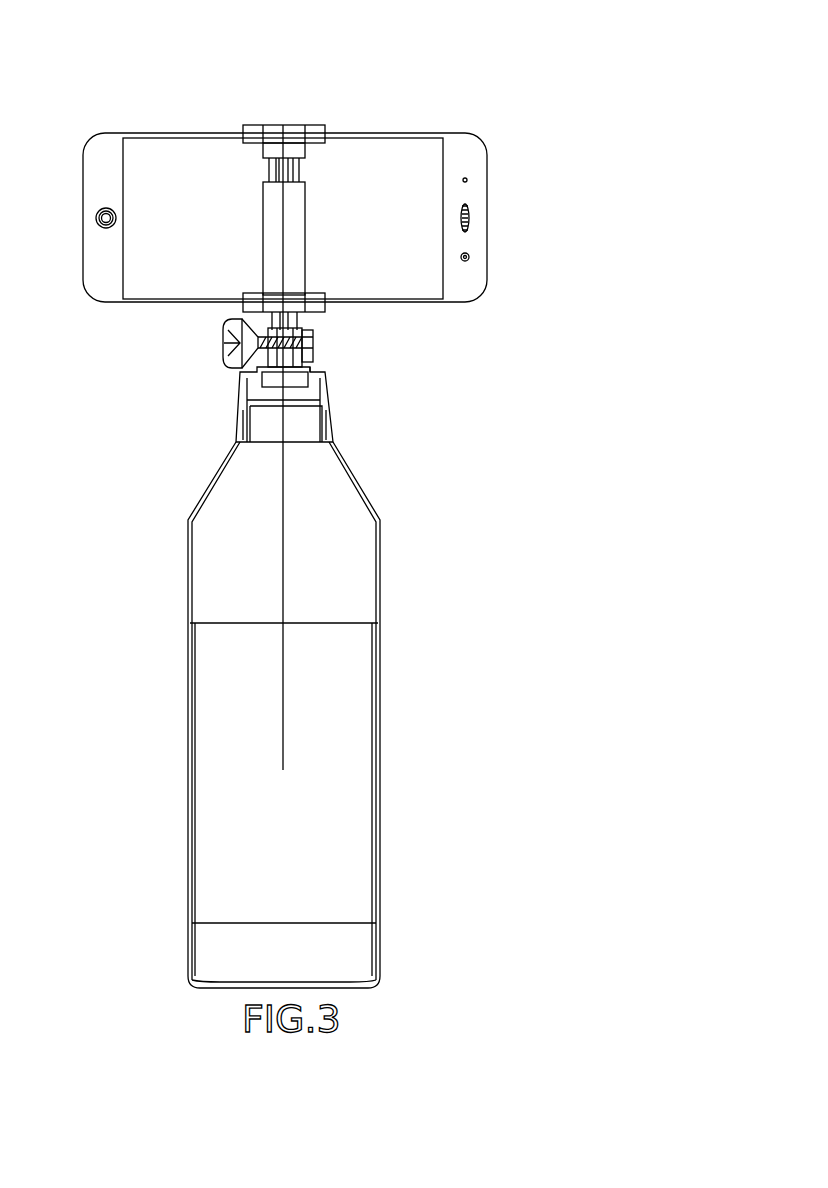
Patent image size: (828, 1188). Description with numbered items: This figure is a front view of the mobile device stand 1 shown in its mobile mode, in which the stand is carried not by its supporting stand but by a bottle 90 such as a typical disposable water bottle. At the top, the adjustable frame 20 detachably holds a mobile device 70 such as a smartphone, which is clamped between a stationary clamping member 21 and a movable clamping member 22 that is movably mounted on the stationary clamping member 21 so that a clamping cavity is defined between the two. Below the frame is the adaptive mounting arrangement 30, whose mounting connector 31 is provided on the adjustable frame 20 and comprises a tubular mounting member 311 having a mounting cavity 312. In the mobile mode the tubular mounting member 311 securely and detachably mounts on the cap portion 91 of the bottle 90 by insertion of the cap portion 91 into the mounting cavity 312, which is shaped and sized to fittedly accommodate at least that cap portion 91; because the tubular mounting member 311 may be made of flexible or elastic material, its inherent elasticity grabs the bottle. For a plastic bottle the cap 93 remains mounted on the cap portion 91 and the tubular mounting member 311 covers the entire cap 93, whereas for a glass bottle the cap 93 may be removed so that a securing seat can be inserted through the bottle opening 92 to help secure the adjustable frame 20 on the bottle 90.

The mobile device stand 1 is at (470, 407).
The adjustable frame 20 is at (250, 183).
The stationary clamping member 21 is at (275, 233).
The movable clamping member 22 is at (266, 126).
The adaptive mounting arrangement 30 is at (335, 335).
The mounting connector 31 is at (290, 426).
The tubular mounting member 311 is at (401, 371).
The mounting cavity 312 is at (311, 397).
The mobile device 70 is at (437, 168).
The bottle 90 is at (280, 697).
The cap portion 91 is at (322, 432).
The bottle opening 92 is at (302, 413).
The cap 93 is at (272, 407).